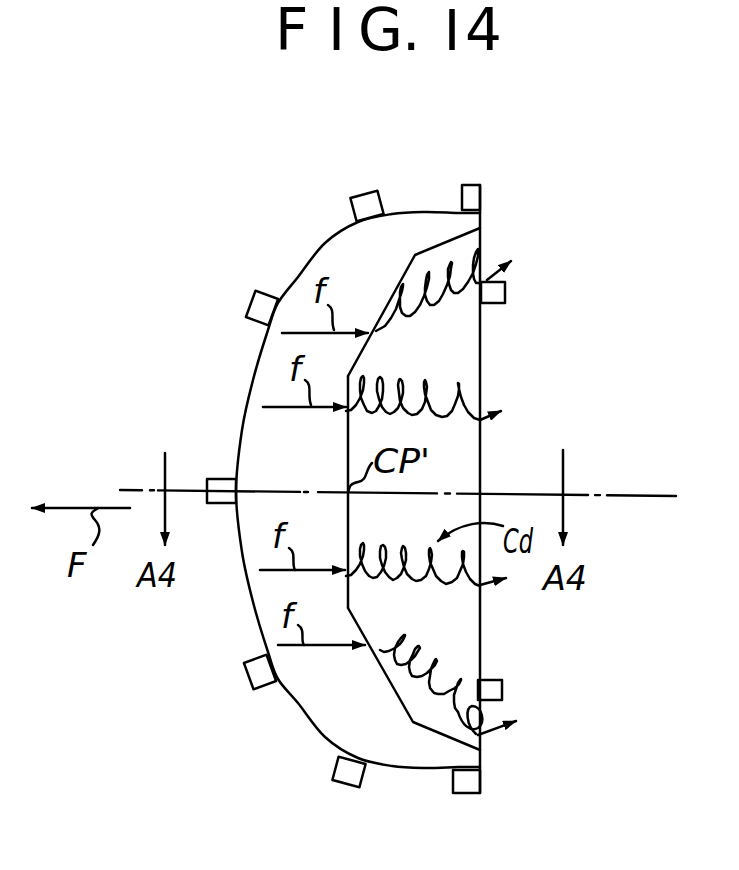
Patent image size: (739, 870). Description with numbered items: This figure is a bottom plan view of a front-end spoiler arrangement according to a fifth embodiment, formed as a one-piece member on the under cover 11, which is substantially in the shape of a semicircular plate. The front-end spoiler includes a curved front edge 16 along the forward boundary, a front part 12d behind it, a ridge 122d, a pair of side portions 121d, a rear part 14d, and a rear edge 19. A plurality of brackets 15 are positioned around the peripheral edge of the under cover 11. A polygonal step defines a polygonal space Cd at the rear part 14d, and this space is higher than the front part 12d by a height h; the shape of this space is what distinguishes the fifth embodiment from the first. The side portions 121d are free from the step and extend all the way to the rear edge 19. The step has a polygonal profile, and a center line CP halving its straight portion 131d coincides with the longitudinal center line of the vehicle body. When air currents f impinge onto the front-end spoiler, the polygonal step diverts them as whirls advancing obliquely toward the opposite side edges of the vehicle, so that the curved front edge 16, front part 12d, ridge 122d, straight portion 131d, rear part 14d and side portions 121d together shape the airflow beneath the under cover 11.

The under cover 11 is at (316, 224).
The front part 12d is at (267, 388).
The curved front edge 16 is at (297, 277).
The side portions 121d is at (432, 228).
The ridge 122d is at (348, 590).
The straight portion 131d is at (350, 430).
The rear part 14d is at (452, 601).
The brackets 15 is at (505, 292).
The rear edge 19 is at (477, 740).